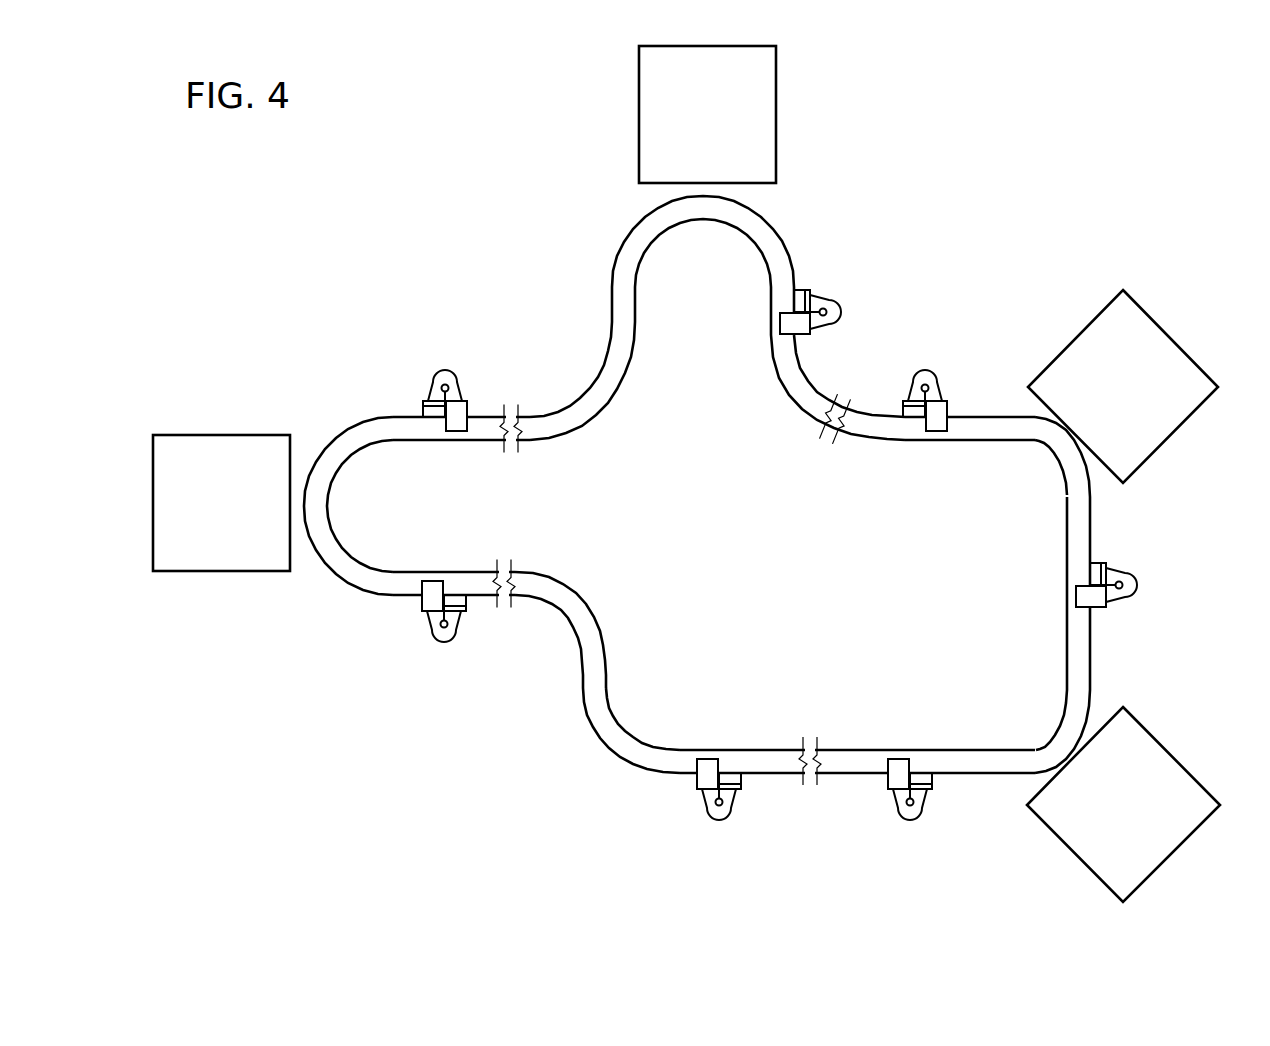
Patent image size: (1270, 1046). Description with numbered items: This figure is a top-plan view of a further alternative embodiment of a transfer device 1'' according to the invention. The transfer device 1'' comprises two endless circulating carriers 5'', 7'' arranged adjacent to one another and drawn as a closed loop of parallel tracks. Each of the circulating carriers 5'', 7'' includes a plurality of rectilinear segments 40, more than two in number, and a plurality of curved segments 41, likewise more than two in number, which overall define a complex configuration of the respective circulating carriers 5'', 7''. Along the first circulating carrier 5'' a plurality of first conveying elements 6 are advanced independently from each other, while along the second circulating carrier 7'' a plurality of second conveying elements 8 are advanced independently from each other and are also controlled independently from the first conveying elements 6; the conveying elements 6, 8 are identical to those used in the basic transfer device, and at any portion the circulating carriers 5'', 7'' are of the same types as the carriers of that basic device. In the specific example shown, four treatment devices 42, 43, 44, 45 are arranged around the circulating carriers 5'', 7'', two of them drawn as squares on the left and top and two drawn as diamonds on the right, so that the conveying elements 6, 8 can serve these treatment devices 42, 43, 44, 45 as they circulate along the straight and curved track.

The transfer device 1'' is at (703, 474).
The endless circulating carrier 5'' is at (697, 511).
The endless circulating carrier 7'' is at (697, 491).
The first conveying elements 6 is at (818, 335).
The second conveying elements 8 is at (815, 290).
The rectilinear segments 40 is at (490, 428).
The curved segments 41 is at (700, 212).
The treatment device 42 is at (203, 462).
The treatment device 43 is at (1170, 790).
The treatment device 44 is at (1155, 402).
The treatment device 45 is at (742, 108).